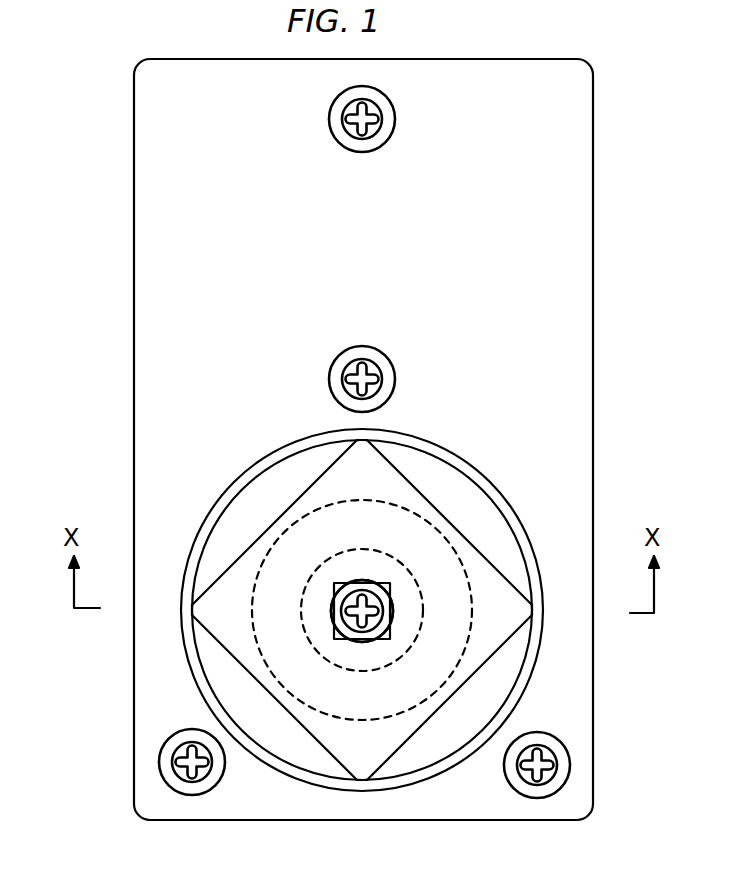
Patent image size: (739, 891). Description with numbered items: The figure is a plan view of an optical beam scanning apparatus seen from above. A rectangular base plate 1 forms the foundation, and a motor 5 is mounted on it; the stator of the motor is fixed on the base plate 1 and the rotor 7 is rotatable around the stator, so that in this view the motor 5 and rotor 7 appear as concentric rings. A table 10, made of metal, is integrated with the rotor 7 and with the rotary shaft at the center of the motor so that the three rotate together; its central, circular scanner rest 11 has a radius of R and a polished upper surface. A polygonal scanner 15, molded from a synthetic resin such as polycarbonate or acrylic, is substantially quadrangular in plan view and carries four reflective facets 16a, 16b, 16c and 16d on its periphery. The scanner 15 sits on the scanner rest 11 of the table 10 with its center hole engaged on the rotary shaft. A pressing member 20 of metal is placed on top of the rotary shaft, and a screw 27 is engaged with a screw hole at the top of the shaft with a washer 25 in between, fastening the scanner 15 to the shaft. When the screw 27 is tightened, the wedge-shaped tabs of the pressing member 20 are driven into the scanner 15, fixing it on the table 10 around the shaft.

The base plate 1 is at (593, 272).
The motor 5 is at (484, 472).
The rotor 7 is at (527, 532).
The table 10 is at (413, 710).
The scanner rest 11 is at (338, 672).
The polygonal scanner 15 is at (422, 626).
The reflective facet 16a is at (505, 575).
The reflective facet 16b is at (497, 656).
The reflective facet 16c is at (260, 683).
The reflective facet 16d is at (285, 510).
The pressing member 20 is at (384, 583).
The washer 25 is at (362, 645).
The screw 27 is at (382, 607).